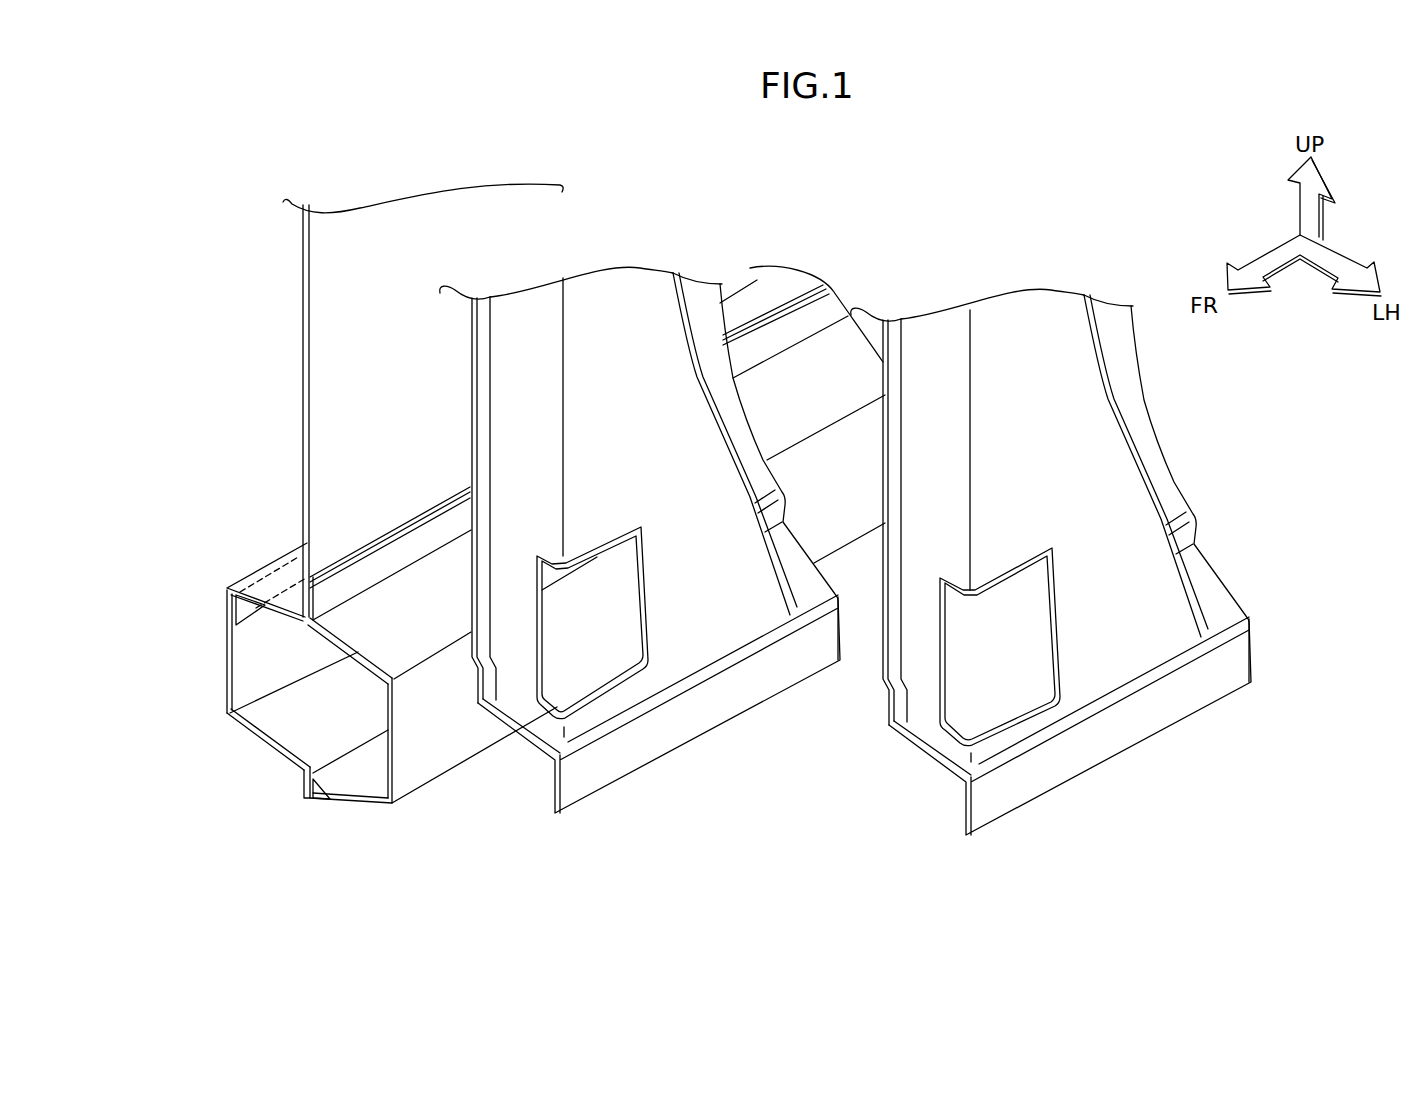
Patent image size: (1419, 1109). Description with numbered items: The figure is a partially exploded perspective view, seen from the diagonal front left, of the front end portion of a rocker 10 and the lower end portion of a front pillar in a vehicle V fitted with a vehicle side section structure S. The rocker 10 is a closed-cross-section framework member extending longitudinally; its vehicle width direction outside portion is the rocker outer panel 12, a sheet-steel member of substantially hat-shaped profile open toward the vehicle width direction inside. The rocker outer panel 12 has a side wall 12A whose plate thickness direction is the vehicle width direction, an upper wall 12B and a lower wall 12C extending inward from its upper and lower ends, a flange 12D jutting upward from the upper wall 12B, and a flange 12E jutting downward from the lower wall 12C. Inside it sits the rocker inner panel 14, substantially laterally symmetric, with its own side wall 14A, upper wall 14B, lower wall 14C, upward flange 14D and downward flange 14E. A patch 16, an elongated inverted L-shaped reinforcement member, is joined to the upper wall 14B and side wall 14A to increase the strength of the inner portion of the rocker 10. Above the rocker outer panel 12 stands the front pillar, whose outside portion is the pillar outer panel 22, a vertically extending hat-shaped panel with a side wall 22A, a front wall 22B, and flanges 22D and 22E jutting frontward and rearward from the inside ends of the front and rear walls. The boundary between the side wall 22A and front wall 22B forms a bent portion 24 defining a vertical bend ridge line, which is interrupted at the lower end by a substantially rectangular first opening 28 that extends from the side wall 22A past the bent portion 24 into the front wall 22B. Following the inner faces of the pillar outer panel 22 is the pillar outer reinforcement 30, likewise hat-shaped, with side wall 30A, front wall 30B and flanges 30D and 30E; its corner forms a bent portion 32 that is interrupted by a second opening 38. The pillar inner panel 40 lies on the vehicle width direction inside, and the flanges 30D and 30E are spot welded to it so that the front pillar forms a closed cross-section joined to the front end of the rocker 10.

The rocker 10 is at (307, 801).
The rocker outer panel 12 is at (595, 575).
The side wall 12A is at (443, 762).
The upper wall 12B is at (360, 658).
The lower wall 12C is at (372, 806).
The flange 12D is at (362, 567).
The flange 12E is at (328, 792).
The rocker inner panel 14 is at (480, 550).
The side wall 14A is at (222, 663).
The upper wall 14B is at (277, 608).
The lower wall 14C is at (252, 733).
The flange 14D is at (402, 520).
The flange 14E is at (304, 780).
The patch 16 is at (236, 617).
The front pillar outer panel 22 is at (1051, 551).
The side wall 22A is at (1066, 356).
The front wall 22B is at (905, 490).
The flange 22D is at (968, 522).
The flange 22E is at (1167, 488).
The bent portion 24 is at (970, 470).
The first opening 28 is at (1044, 627).
The front pillar outer reinforcement 30 is at (611, 550).
The side wall 30A is at (625, 300).
The front wall 30B is at (518, 308).
The flange 30D is at (485, 333).
The flange 30E is at (698, 292).
The bent portion 32 is at (565, 410).
The second opening 38 is at (632, 591).
The front pillar inner panel 40 is at (300, 316).
The vehicle side section structure S is at (753, 212).
The vehicle V is at (958, 182).